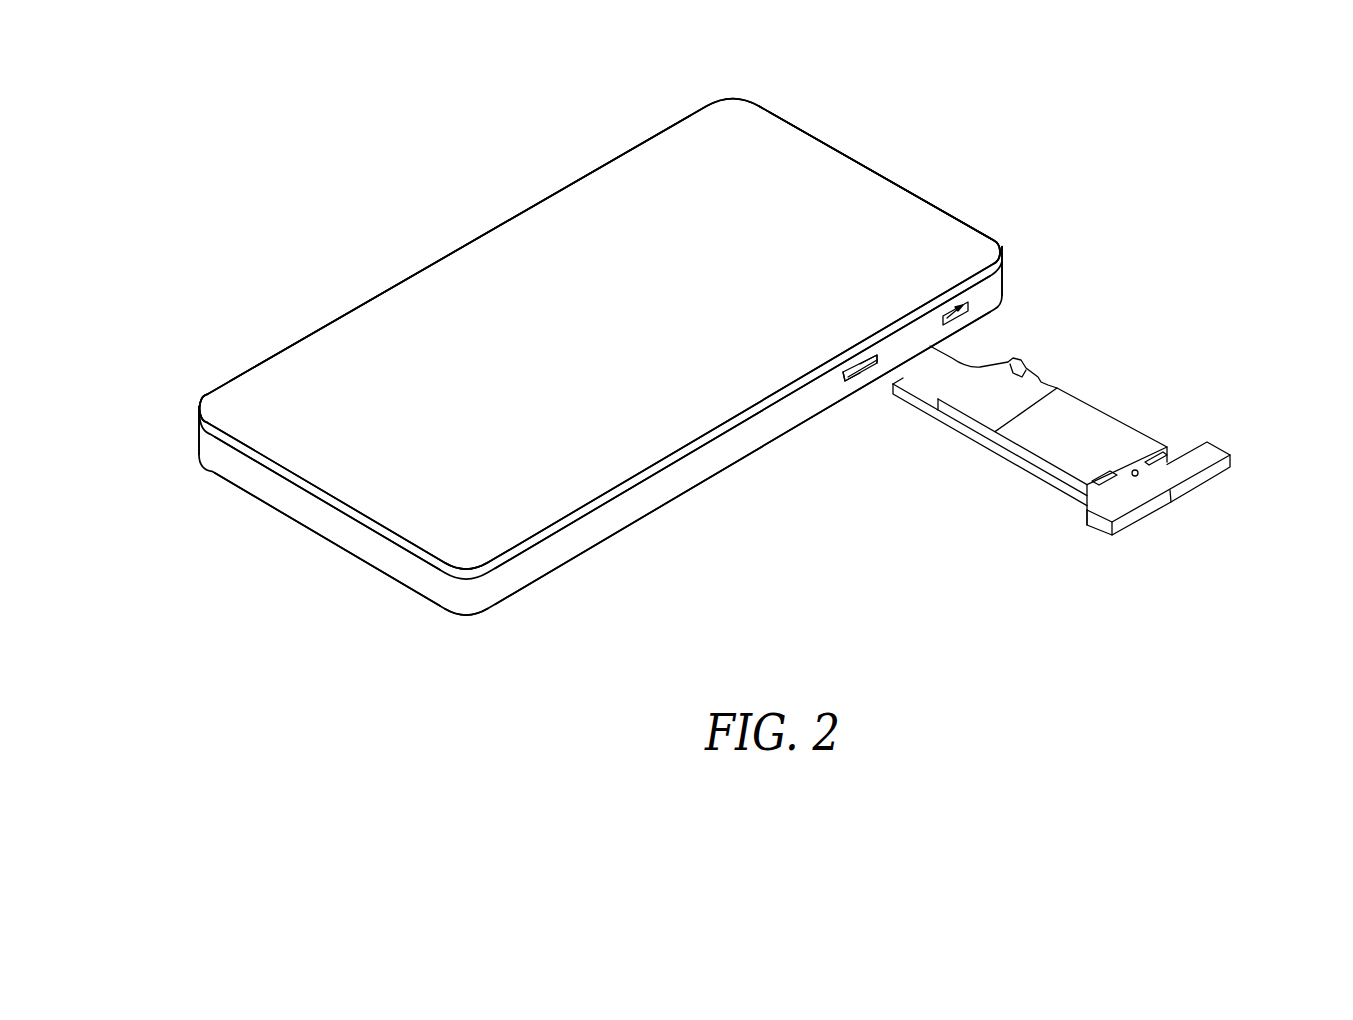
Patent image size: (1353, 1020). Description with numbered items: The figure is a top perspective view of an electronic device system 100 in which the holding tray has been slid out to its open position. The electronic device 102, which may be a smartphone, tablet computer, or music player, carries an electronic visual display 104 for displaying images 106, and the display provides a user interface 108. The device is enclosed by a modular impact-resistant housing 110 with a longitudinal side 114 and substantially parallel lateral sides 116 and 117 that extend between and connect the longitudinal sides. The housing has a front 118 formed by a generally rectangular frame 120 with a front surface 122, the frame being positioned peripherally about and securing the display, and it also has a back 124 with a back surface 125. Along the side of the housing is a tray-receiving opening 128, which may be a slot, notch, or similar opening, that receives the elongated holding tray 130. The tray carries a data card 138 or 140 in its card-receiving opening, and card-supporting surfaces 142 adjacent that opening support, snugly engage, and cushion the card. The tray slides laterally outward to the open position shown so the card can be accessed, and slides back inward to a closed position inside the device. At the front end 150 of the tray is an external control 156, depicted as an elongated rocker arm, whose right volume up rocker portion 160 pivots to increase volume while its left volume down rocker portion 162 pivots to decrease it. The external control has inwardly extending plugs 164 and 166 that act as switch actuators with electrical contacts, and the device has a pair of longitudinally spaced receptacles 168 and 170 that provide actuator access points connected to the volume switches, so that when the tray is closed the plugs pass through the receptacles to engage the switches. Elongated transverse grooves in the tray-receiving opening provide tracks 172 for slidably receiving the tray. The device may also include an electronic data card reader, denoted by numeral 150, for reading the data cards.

The electronic device system 100 is at (1017, 490).
The electronic device 102 is at (735, 101).
The electronic visual display 104 is at (797, 157).
The images 106 is at (447, 323).
The user interface 108 is at (293, 453).
The modular impact-resistant housing 110 is at (199, 432).
The longitudinal side 114 is at (363, 303).
The lateral side 116 is at (940, 207).
The lateral side 117 is at (327, 537).
The front 118 is at (450, 570).
The generally rectangular frame 120 is at (1003, 248).
The front surface 122 is at (518, 523).
The back 124 is at (660, 507).
The back surface 125 is at (743, 460).
The tray-receiving opening 128 is at (893, 351).
The elongated holding tray 130 is at (1052, 380).
The data card 138 is at (1092, 440).
The data card 140 is at (950, 363).
The card-supporting surfaces 142 is at (1057, 477).
The front end 150 is at (842, 255).
The external control 156 is at (1168, 498).
The right volume up rocker portion 160 is at (1217, 482).
The left volume down rocker portion 162 is at (1145, 518).
The plug 164 is at (1190, 445).
The plug 166 is at (1083, 505).
The receptacle 168 is at (967, 303).
The receptacle 170 is at (847, 378).
The tracks 172 is at (880, 357).